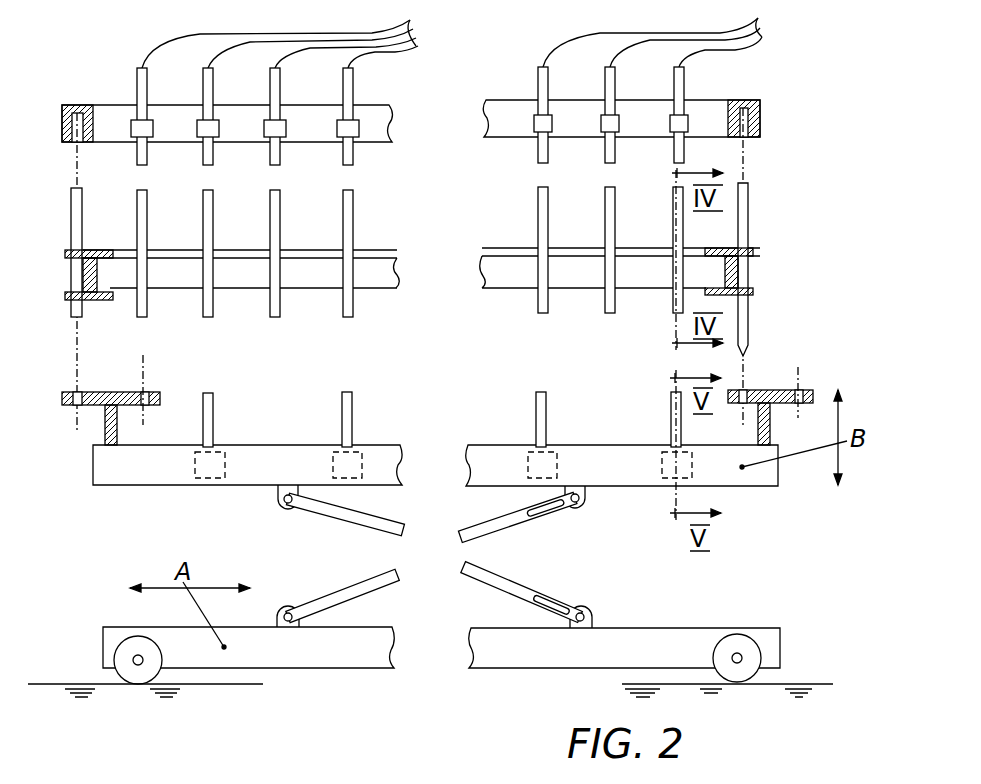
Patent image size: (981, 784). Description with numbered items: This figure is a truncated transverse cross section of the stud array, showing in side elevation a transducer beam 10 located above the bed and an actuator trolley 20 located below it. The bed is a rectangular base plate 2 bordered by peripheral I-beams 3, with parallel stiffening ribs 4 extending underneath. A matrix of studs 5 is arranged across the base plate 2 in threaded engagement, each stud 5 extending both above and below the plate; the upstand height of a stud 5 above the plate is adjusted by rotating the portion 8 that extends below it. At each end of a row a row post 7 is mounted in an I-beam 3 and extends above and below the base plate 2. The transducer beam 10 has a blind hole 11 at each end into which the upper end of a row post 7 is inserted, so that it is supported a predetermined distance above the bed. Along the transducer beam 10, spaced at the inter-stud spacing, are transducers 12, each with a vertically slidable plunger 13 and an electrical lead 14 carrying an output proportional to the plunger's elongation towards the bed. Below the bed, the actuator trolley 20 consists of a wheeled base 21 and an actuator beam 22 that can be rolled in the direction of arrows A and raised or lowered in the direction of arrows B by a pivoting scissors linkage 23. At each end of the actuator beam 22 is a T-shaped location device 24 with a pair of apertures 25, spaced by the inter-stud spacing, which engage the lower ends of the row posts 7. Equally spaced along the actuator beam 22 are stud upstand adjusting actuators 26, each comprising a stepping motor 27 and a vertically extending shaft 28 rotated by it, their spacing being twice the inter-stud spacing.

The base plate 2 is at (493, 248).
The peripheral I-beam 3 is at (100, 300).
The stiffening rib 4 is at (376, 275).
The stud 5 is at (353, 228).
The row post 7 is at (72, 217).
The lower portion of stud 8 is at (212, 305).
The transducer beam 10 is at (750, 100).
The blind hole 11 is at (77, 145).
The transducer 12 is at (353, 92).
The plunger 13 is at (355, 158).
The electrical lead 14 is at (247, 33).
The actuator trolley 20 is at (790, 592).
The wheeled base 21 is at (627, 647).
The actuator beam 22 is at (637, 472).
The pivoting scissors linkage 23 is at (330, 518).
The T-shaped location device 24 is at (105, 430).
The aperture 25 is at (80, 390).
The stud upstand adjusting actuator 26 is at (172, 464).
The stepping motor 27 is at (350, 462).
The vertically extending shaft 28 is at (214, 412).